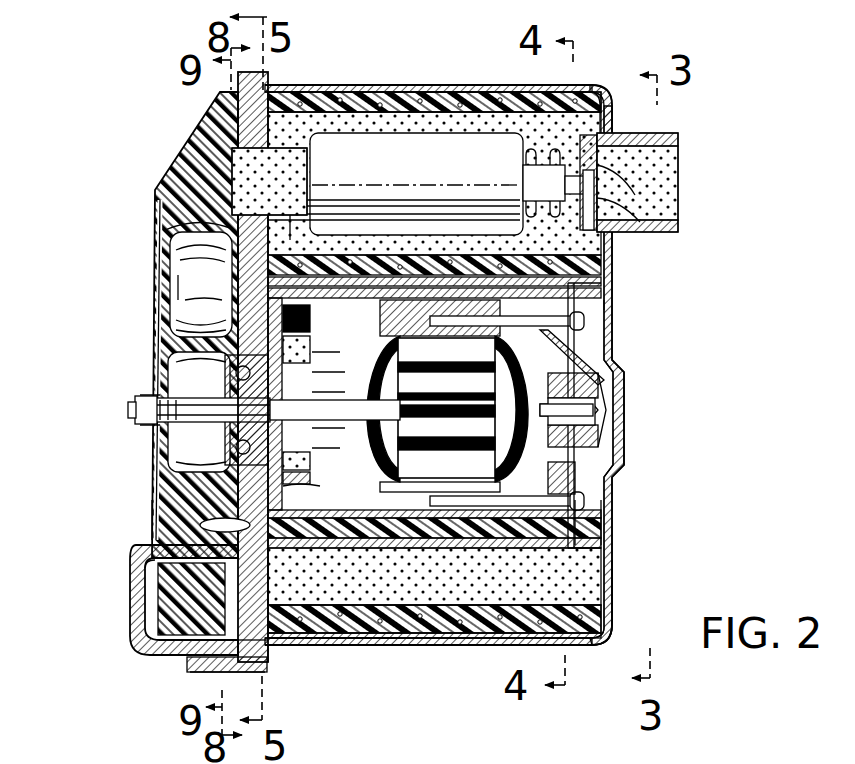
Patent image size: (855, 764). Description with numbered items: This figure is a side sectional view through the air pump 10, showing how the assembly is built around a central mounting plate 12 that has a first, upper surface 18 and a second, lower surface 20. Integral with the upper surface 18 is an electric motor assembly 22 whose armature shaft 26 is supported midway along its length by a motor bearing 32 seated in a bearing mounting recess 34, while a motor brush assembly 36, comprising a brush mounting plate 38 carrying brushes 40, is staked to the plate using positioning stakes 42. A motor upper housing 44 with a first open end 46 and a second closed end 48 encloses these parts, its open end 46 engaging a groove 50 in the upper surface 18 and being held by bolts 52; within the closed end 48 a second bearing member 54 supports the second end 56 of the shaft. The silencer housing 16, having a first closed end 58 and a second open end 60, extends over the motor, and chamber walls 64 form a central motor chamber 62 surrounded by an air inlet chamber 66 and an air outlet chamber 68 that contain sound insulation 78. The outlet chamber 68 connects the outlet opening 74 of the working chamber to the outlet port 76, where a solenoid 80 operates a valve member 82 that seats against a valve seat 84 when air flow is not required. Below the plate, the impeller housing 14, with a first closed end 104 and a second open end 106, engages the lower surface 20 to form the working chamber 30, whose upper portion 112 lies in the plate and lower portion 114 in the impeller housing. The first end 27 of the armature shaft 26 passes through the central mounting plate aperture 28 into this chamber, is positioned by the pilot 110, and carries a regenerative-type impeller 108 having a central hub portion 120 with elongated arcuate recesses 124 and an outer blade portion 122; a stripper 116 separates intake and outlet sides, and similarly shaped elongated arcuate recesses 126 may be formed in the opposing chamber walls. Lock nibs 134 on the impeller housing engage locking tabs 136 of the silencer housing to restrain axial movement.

The air pump 10 is at (628, 303).
The mounting plate 12 is at (236, 100).
The impeller housing 14 is at (147, 490).
The silencer housing 16 is at (612, 560).
The first, upper surface 18 is at (268, 585).
The second, lower surface 20 is at (152, 548).
The electric motor assembly 22 is at (582, 349).
The armature shaft 26 is at (150, 388).
The first end 27 is at (127, 427).
The central mounting plate aperture 28 is at (172, 372).
The working chamber 30 is at (146, 616).
The motor bearing 32 is at (156, 422).
The bearing mounting recess 34 is at (230, 455).
The motor brush assembly 36 is at (380, 314).
The brush mounting plate 38 is at (300, 467).
The brushes 40 is at (312, 348).
The positioning stakes 42 is at (320, 547).
The motor upper housing 44 is at (583, 481).
The first open end 46 is at (268, 567).
The second closed end 48 is at (582, 378).
The groove 50 is at (290, 265).
The bolts 52 is at (585, 322).
The second bearing member 54 is at (555, 447).
The second end 56 is at (575, 410).
The first closed end 58 is at (612, 590).
The second open end 60 is at (263, 652).
The central motor chamber 62 is at (595, 518).
The chamber walls 64 is at (512, 550).
The air inlet chamber 66 is at (388, 640).
The air outlet chamber 68 is at (594, 103).
The outlet opening 74 is at (238, 168).
The outlet port 76 is at (667, 165).
The sound insulation 78 is at (330, 92).
The solenoid 80 is at (470, 148).
The valve member 82 is at (598, 200).
The valve seat 84 is at (597, 150).
The first closed end 104 is at (176, 276).
The second open end 106 is at (266, 662).
The regenerative-type impeller 108 is at (152, 522).
The pilot 110 is at (150, 438).
The upper portion 112 is at (205, 640).
The lower portion 114 is at (150, 590).
The stripper 116 is at (162, 205).
The central hub portion 120 is at (183, 300).
The outer blade portion 122 is at (165, 228).
The elongated arcuate recesses 124 is at (180, 258).
The elongated arcuate recesses 126 is at (176, 330).
The lock nibs 134 is at (225, 663).
The locking tabs 136 is at (225, 672).